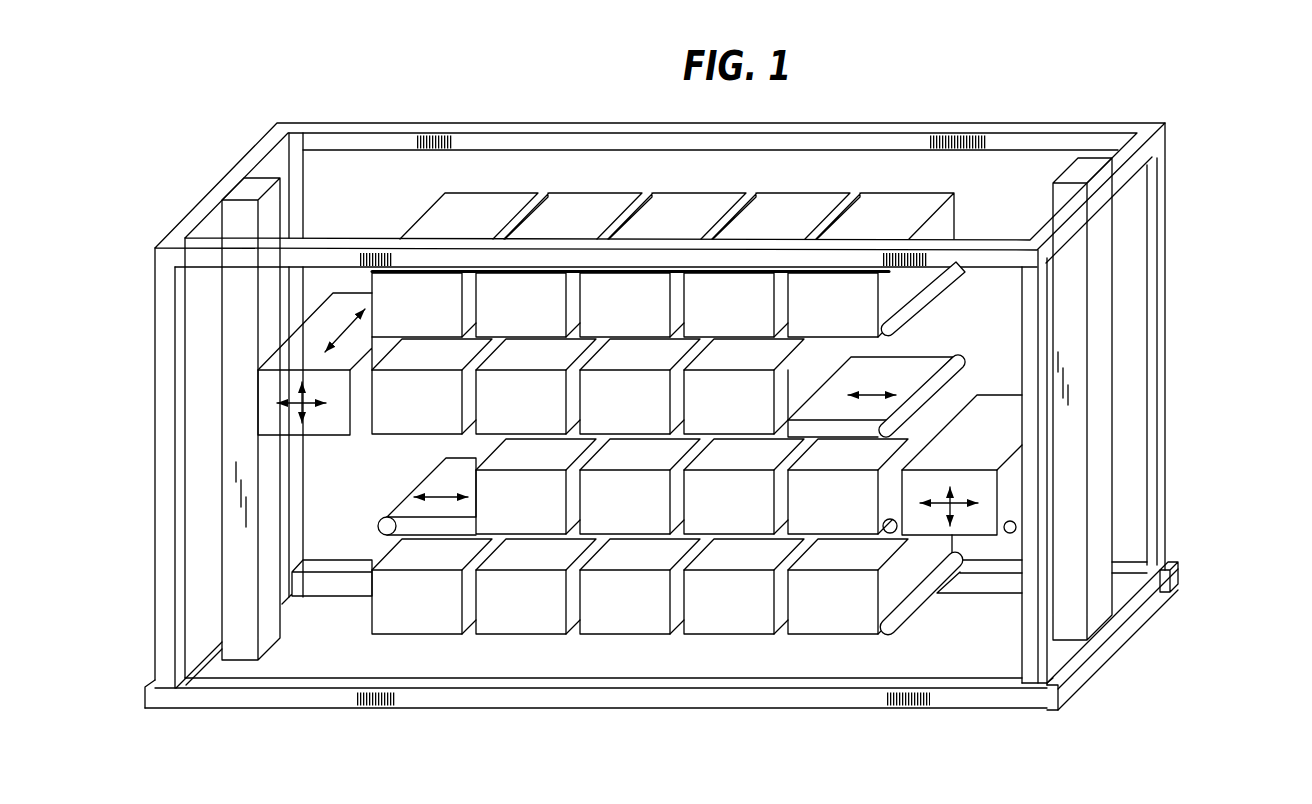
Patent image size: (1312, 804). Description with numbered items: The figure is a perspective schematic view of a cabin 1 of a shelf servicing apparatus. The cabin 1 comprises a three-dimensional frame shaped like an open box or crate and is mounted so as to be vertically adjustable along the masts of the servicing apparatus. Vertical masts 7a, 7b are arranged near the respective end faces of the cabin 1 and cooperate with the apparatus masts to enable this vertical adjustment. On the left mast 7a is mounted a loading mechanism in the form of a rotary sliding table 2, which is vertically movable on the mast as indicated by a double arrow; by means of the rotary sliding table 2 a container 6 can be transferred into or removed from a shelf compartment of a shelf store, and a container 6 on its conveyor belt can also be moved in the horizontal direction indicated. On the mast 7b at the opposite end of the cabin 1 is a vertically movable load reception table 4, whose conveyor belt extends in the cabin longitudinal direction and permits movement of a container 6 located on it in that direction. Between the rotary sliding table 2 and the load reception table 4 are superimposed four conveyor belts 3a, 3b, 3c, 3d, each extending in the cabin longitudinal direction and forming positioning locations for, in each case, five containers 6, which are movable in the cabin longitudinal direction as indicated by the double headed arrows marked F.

The cabin 1 is at (142, 307).
The rotary sliding table 2 is at (330, 425).
The conveyor belt 3a is at (947, 292).
The conveyor belt 3b is at (963, 367).
The conveyor belt 3c is at (423, 525).
The conveyor belt 3d is at (908, 623).
The load reception table 4 is at (1013, 542).
The container 6 is at (1017, 504).
The vertical mast 7a is at (257, 352).
The vertical mast 7b is at (1100, 423).